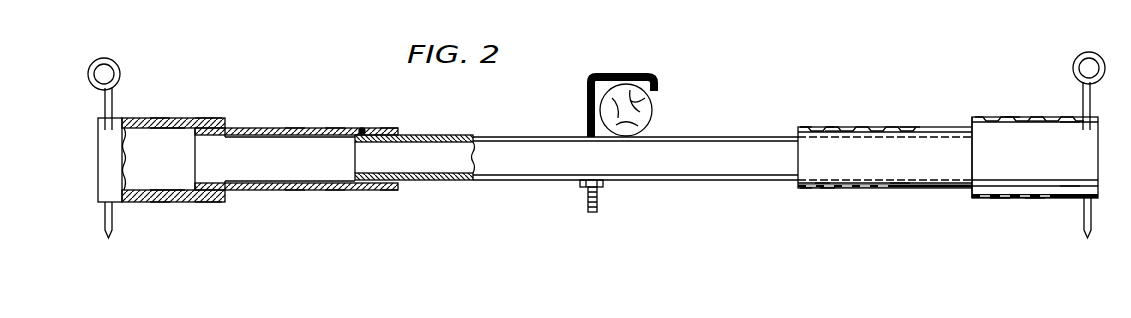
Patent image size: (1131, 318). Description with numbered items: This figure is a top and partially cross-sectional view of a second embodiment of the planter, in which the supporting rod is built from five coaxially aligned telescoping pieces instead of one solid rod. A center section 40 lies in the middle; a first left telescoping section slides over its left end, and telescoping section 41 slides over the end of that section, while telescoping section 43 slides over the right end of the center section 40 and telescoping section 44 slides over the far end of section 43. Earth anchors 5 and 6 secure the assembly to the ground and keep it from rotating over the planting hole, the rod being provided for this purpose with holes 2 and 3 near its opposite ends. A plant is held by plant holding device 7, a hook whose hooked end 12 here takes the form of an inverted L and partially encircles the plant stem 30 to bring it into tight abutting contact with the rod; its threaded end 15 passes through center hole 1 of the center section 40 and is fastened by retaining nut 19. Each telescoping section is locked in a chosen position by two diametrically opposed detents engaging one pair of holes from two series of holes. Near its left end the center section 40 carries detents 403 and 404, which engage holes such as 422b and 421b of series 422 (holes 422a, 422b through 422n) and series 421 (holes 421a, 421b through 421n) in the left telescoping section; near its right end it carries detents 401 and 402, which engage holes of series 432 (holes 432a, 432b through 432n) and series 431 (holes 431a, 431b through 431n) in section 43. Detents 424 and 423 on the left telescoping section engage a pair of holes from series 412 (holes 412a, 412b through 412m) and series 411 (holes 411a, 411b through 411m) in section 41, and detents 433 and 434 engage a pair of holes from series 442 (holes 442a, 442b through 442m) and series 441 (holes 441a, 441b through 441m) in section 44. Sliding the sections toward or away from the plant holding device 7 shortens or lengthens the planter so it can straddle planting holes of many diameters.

The center hole 1 is at (583, 188).
The hole 2 is at (100, 118).
The hole 3 is at (1095, 120).
The earth anchor 5 is at (121, 73).
The earth anchor 6 is at (1074, 63).
The plant holding device 7 is at (574, 83).
The plant clip 12 is at (625, 76).
The threaded end 15 is at (590, 210).
The retaining nut 19 is at (602, 188).
The plant stem 30 is at (651, 111).
The center section 40 is at (676, 181).
The telescoping section 41 is at (112, 118).
The telescoping section 43 is at (940, 130).
The telescoping section 44 is at (1066, 120).
The detent 401 is at (823, 185).
The detent 402 is at (830, 128).
The detent 403 is at (360, 129).
The detent 404 is at (372, 178).
The series of holes 411 is at (130, 238).
The hole 411a is at (212, 199).
The hole 411b is at (192, 199).
The hole 411m is at (186, 176).
The series of holes 412 is at (135, 86).
The hole 412a is at (213, 124).
The hole 412b is at (170, 124).
The hole 412m is at (186, 150).
The series of holes 421 is at (285, 225).
The hole 421a is at (388, 190).
The hole 421b is at (362, 190).
The hole 421n is at (292, 189).
The series of holes 422 is at (282, 97).
The hole 422a is at (392, 131).
The hole 422b is at (338, 131).
The hole 422n is at (296, 131).
The detent 423 is at (221, 186).
The detent 424 is at (221, 133).
The series of holes 431 is at (897, 231).
The hole 431a is at (806, 190).
The hole 431b is at (828, 190).
The hole 431n is at (900, 185).
The series of holes 432 is at (798, 91).
The hole 432a is at (806, 127).
The hole 432b is at (834, 128).
The hole 432n is at (910, 130).
The detent 433 is at (972, 193).
The detent 434 is at (983, 120).
The series of holes 441 is at (968, 79).
The hole 441a is at (1016, 120).
The hole 441b is at (1030, 120).
The hole 441m is at (1075, 130).
The series of holes 442 is at (970, 234).
The hole 442a is at (1000, 199).
The hole 442b is at (1030, 199).
The hole 442m is at (1067, 185).